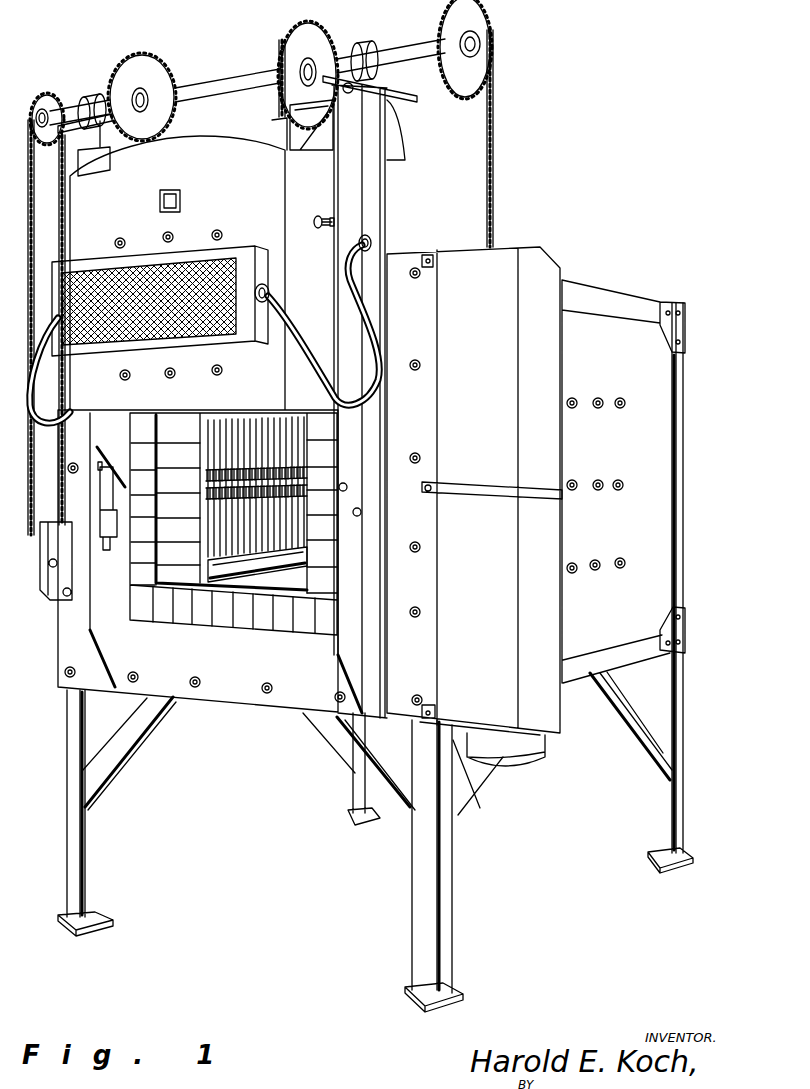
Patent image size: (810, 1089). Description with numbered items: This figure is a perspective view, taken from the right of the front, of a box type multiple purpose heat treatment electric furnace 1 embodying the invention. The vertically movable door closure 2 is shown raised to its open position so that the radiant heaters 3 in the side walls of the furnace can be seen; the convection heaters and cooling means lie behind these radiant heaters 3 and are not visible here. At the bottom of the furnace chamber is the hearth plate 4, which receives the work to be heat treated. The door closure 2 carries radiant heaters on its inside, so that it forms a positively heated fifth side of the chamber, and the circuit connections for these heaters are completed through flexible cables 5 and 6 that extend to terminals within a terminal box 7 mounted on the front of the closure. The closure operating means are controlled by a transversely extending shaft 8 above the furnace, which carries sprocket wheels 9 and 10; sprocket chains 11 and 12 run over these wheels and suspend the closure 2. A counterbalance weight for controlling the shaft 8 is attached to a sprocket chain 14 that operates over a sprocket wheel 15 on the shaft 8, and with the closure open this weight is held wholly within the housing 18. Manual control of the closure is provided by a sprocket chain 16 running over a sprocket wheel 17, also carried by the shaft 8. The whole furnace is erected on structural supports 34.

The box type furnace 1 is at (612, 333).
The vertically movable door closure 2 is at (302, 218).
The radiant heaters 3 is at (253, 440).
The hearth plate 4 is at (287, 577).
The flexible cable 5 is at (27, 388).
The flexible cable 6 is at (303, 338).
The terminal box 7 is at (152, 333).
The transversely extending shaft 8 is at (198, 88).
The sprocket wheel 9 is at (150, 75).
The sprocket wheel 10 is at (310, 42).
The sprocket chain 11 is at (112, 70).
The sprocket chain 12 is at (280, 50).
The sprocket chain 14 is at (494, 202).
The sprocket wheel 15 is at (475, 27).
The sprocket chain 16 is at (28, 206).
The sprocket wheel 17 is at (47, 97).
The housing 18 is at (500, 288).
The structural supports 34 is at (77, 860).